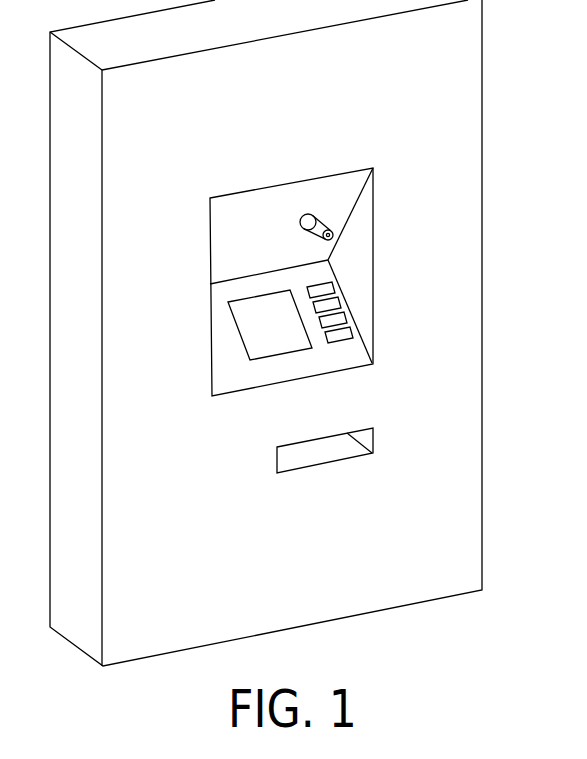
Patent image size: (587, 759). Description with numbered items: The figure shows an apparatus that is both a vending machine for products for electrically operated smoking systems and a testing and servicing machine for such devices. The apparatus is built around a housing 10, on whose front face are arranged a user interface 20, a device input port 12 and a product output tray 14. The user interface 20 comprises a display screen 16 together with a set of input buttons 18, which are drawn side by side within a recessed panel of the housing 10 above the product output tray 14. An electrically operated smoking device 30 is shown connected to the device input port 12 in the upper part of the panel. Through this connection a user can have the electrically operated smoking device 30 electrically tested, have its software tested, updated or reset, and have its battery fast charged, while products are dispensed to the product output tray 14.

The housing 10 is at (483, 153).
The device input port 12 is at (302, 228).
The product output tray 14 is at (374, 437).
The display screen 16 is at (240, 323).
The input buttons 18 is at (353, 337).
The user interface 20 is at (328, 355).
The electrically operated smoking device 30 is at (322, 248).